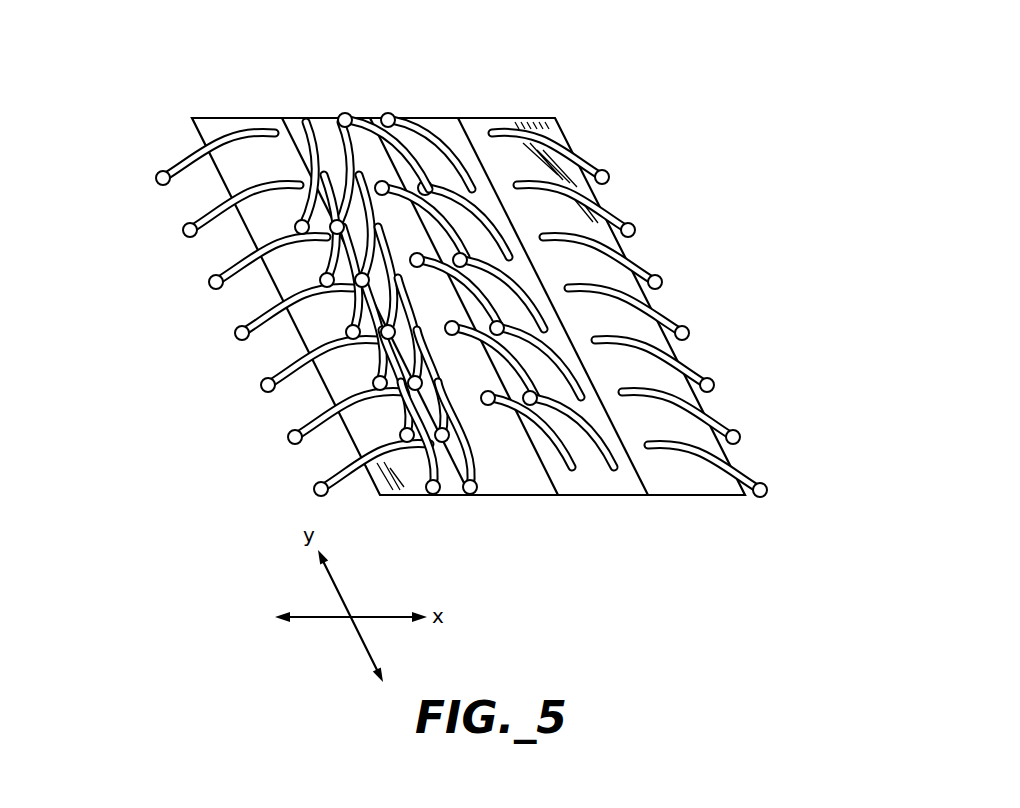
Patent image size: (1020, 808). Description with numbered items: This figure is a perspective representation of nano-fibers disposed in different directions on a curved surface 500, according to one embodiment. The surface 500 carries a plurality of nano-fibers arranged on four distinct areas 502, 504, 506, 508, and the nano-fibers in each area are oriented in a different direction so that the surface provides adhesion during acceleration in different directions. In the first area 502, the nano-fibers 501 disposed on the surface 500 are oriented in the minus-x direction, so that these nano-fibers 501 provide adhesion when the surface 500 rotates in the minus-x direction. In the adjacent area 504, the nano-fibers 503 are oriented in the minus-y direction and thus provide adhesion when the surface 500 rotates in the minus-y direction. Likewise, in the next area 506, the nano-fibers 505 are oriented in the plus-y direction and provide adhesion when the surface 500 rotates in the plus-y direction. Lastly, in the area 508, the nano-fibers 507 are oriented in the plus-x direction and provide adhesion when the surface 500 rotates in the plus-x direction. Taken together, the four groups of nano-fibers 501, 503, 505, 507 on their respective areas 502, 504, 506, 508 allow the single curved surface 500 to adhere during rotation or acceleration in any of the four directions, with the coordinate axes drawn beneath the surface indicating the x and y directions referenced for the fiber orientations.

The surface 500 is at (585, 567).
The nano-fibers 501 is at (157, 176).
The area 502 is at (243, 125).
The nano-fibers 503 is at (483, 497).
The area 504 is at (319, 126).
The nano-fibers 505 is at (388, 113).
The area 506 is at (455, 124).
The nano-fibers 507 is at (610, 178).
The area 508 is at (527, 123).